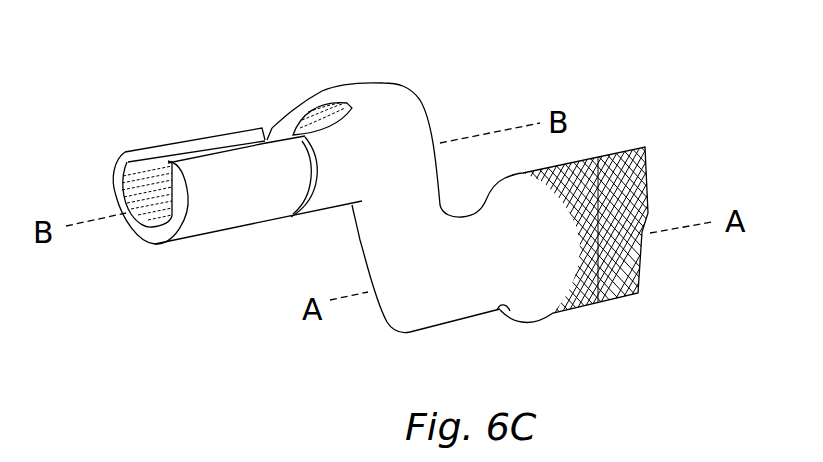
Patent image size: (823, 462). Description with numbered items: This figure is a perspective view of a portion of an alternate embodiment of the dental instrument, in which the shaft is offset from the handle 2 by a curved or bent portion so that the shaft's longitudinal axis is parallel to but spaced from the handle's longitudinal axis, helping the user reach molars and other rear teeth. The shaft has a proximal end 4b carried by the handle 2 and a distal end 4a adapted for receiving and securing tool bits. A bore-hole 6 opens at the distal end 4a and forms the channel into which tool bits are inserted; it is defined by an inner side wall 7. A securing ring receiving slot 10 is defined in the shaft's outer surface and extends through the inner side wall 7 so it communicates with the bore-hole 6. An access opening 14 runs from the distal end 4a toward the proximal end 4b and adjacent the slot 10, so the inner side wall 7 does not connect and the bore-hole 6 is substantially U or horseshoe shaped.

The handle 2 is at (622, 131).
The distal end 4a is at (155, 252).
The proximal end 4b is at (452, 329).
The bore-hole 6 is at (147, 193).
The inner side wall 7 is at (153, 172).
The securing ring receiving slot 10 is at (292, 216).
The access opening 14 is at (328, 90).